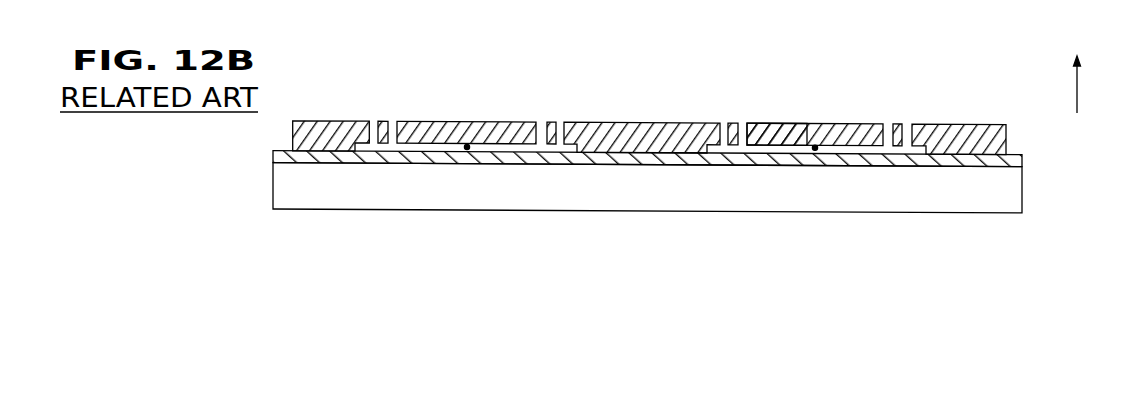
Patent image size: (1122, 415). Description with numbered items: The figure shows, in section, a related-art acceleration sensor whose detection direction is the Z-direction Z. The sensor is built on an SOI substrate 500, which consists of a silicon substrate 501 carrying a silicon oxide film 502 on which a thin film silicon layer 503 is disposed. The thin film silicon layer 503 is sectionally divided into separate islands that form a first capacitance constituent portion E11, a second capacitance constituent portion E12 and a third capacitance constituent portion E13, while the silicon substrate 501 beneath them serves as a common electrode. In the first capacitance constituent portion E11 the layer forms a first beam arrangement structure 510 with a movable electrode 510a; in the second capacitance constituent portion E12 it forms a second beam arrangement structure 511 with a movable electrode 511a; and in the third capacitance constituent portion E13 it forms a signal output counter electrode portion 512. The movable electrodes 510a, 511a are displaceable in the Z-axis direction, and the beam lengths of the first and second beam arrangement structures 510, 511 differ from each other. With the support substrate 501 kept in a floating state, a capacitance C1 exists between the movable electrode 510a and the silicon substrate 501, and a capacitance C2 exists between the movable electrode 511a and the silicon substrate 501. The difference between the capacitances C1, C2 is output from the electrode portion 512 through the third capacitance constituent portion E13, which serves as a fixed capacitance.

The SOI substrate 500 is at (680, 130).
The silicon substrate 501 is at (1023, 195).
The silicon oxide film 502 is at (1023, 162).
The thin film silicon layer 503 is at (953, 123).
The first beam arrangement structure 510 is at (523, 121).
The movable electrode 510a is at (445, 121).
The second beam arrangement structure 511 is at (863, 123).
The movable electrode 511a is at (785, 122).
The signal output counter electrode portion 512 is at (657, 55).
The capacitance C1 is at (467, 148).
The capacitance C2 is at (815, 147).
The first capacitance constituent portion E11 is at (425, 85).
The second capacitance constituent portion E12 is at (822, 84).
The third capacitance constituent portion E13 is at (642, 85).
The Z-direction Z is at (1077, 70).